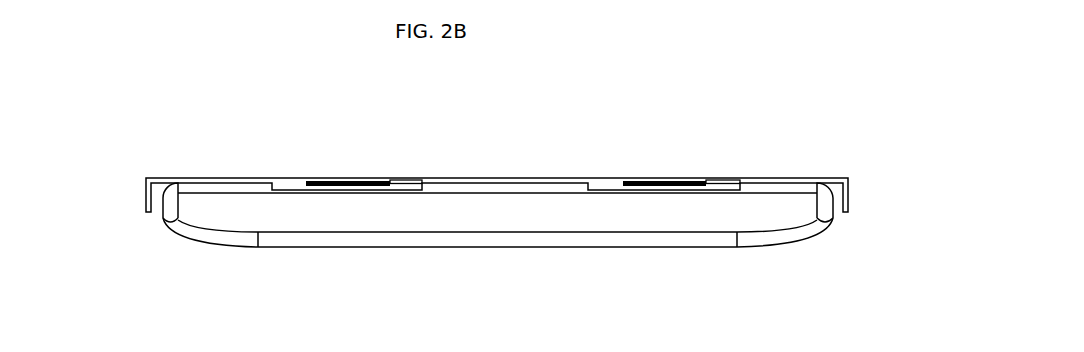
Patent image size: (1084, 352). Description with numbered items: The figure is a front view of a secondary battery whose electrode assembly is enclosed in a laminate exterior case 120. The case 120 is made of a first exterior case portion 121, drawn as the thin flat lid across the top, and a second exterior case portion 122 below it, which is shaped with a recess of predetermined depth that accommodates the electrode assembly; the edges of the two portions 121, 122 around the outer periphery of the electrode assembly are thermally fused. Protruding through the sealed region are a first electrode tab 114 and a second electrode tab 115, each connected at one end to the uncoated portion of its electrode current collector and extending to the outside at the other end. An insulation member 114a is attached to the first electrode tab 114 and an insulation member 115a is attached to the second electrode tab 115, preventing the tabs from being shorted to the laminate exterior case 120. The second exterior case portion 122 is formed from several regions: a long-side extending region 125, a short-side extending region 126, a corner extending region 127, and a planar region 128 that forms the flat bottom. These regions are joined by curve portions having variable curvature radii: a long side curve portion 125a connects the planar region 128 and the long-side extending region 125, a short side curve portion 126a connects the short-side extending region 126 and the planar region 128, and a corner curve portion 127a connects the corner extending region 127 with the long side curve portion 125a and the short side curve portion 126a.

The laminate exterior case 120 is at (853, 167).
The first exterior case portion 121 is at (213, 177).
The second exterior case portion 122 is at (307, 251).
The first electrode tab 114 is at (330, 181).
The insulation member 114a is at (408, 180).
The second electrode tab 115 is at (650, 181).
The insulation member 115a is at (726, 180).
The long-side extending region 125 is at (162, 203).
The long side curve portion 125a is at (193, 242).
The short-side extending region 126 is at (498, 212).
The short side curve portion 126a is at (568, 237).
The corner extending region 127 is at (822, 204).
The corner curve portion 127a is at (825, 226).
The planar region 128 is at (592, 250).